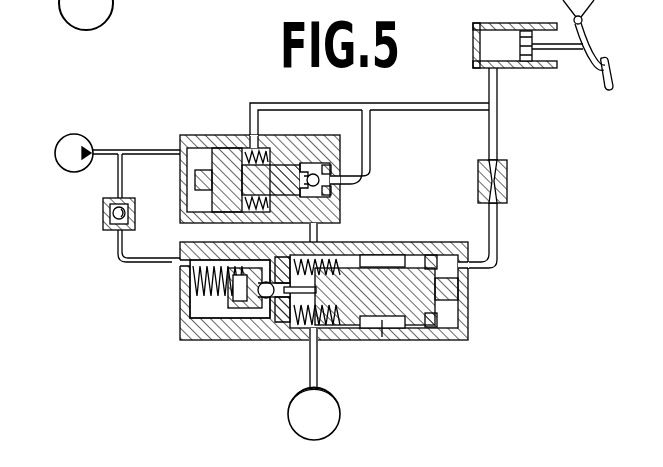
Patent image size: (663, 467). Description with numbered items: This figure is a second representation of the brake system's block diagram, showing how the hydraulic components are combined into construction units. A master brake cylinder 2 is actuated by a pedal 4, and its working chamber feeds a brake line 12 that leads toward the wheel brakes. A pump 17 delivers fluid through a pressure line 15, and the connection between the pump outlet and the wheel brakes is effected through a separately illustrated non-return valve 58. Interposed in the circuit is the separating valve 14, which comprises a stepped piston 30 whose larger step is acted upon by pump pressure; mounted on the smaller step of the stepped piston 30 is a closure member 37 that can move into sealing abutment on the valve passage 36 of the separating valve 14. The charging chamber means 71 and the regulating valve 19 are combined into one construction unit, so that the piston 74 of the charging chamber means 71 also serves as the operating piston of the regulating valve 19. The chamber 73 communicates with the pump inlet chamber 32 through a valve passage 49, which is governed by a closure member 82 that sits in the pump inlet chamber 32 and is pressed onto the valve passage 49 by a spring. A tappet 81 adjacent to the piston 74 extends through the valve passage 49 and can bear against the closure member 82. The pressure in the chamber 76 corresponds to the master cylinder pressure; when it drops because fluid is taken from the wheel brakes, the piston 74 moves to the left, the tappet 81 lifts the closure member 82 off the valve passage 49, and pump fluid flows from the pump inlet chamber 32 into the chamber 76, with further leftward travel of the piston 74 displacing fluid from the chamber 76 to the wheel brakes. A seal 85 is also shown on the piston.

The master brake cylinder 2 is at (537, 68).
The pedal 4 is at (599, 72).
The brake line 12 is at (419, 112).
The separating valve 14 is at (350, 152).
The pressure line 15 is at (114, 243).
The pump 17 is at (62, 140).
The regulating valve 19 is at (270, 326).
The stepped piston 30 is at (268, 164).
The pump inlet chamber 32 is at (200, 325).
The valve passage 36 is at (322, 184).
The closure member 37 is at (300, 185).
The valve passage 49 is at (280, 326).
The non-return valve 58 is at (103, 214).
The charging chamber means 71 is at (404, 340).
The chamber 73 is at (324, 340).
The piston 74 is at (395, 336).
The chamber 76 is at (348, 340).
The tappet 81 is at (292, 340).
The closure member 82 is at (250, 330).
The seal 85 is at (446, 340).